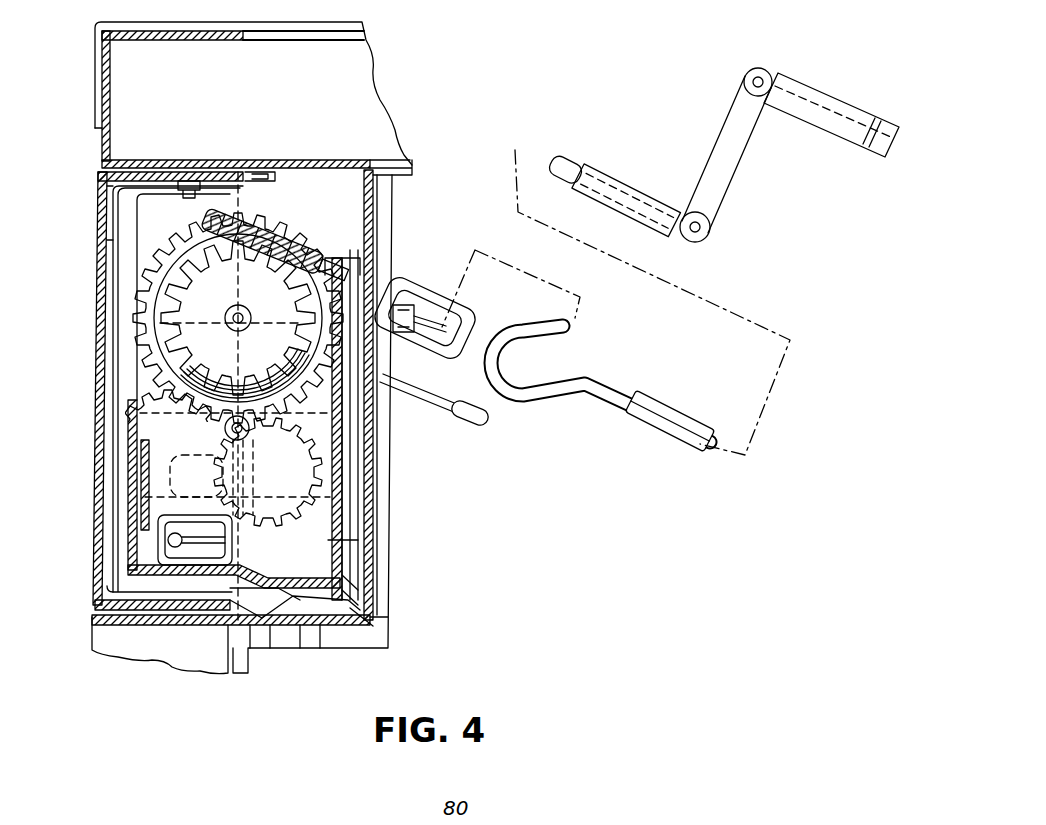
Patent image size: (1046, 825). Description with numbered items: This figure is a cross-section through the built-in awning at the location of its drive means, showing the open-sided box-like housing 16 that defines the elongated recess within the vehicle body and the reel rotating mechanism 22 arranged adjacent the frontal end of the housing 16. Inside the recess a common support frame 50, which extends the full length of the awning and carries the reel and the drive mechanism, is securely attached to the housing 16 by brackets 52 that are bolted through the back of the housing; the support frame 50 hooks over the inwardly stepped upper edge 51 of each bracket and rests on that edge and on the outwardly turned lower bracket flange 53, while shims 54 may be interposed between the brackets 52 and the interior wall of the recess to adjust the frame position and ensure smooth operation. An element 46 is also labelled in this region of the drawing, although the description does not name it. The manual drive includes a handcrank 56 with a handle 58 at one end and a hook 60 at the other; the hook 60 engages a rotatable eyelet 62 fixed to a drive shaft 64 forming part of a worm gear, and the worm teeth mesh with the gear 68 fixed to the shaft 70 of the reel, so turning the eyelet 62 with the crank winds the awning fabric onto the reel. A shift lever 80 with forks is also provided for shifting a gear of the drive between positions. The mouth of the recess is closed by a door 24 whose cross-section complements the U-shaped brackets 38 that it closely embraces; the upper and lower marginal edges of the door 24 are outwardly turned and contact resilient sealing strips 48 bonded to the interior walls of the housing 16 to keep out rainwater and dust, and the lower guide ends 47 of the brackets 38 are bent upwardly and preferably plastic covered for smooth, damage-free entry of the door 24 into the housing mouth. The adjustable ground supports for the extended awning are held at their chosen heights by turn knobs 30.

The box-like housing 16 is at (374, 206).
The reel rotating mechanism 22 is at (342, 198).
The door 24 is at (105, 275).
The turn knobs 30 is at (100, 497).
The U-shaped brackets 38 is at (112, 246).
The mounting bracket 46 is at (335, 537).
The guide ends 47 is at (315, 632).
The resilient sealing strips 48 is at (280, 172).
The support frame 50 is at (342, 512).
The inwardly stepped upper edge 51 is at (343, 270).
The brackets 52 is at (332, 565).
The lower bracket flange 53 is at (365, 620).
The shims 54 is at (360, 582).
The handcrank 56 is at (728, 170).
The handle 58 is at (814, 92).
The hook 60 is at (562, 398).
The rotatable eyelet 62 is at (455, 300).
The drive shaft 64 is at (205, 226).
The gear 68 is at (160, 304).
The shaft 70 is at (225, 320).
The shift lever 80 is at (482, 422).